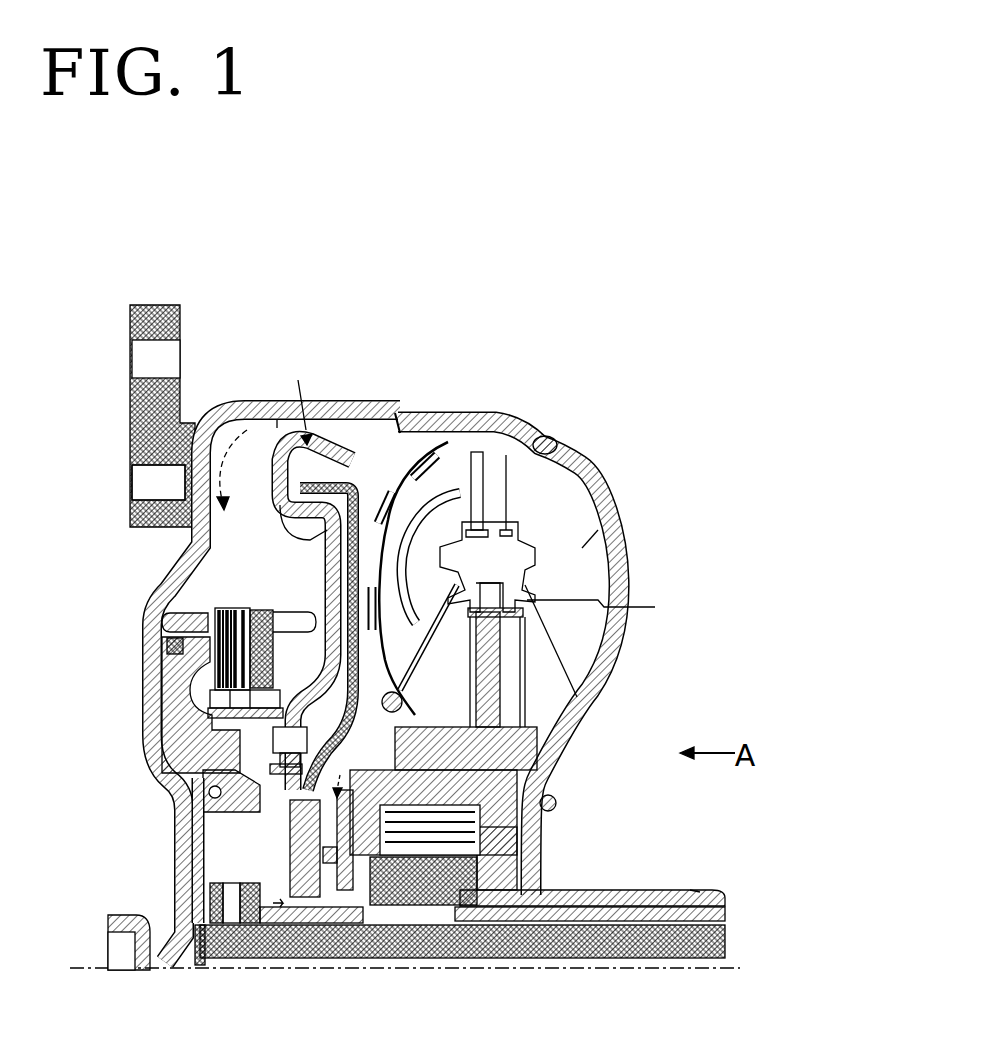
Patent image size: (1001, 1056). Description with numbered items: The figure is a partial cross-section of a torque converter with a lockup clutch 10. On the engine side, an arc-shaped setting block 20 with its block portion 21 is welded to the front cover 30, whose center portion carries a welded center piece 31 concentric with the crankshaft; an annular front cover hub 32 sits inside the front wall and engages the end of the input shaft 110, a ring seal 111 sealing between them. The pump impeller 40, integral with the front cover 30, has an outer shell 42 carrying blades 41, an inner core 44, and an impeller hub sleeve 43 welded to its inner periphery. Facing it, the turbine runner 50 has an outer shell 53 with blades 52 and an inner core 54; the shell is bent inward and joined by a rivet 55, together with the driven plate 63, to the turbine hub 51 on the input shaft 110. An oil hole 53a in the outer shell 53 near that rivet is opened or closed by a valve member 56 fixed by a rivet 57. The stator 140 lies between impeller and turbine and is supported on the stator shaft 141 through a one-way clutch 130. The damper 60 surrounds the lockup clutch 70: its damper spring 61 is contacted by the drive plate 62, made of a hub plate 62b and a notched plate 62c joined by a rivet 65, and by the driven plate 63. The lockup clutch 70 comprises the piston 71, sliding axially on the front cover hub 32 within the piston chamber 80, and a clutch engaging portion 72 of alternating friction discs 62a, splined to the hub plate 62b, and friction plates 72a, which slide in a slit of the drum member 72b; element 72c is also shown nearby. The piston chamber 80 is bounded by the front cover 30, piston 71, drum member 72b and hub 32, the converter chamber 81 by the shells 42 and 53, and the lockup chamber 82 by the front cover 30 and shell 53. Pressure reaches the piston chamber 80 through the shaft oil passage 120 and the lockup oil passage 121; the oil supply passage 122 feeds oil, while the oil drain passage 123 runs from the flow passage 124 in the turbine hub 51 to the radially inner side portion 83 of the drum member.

The torque converter with a lockup clutch 10 is at (764, 369).
The setting block 20 is at (130, 405).
The block portion 21 is at (130, 512).
The front cover 30 is at (247, 404).
The center piece 31 is at (108, 924).
The front cover hub 32 is at (176, 858).
The pump impeller 40 is at (630, 567).
The blades 41 is at (612, 525).
The outer shell 42 is at (575, 458).
The impeller hub sleeve 43 is at (692, 892).
The inner core 44 is at (611, 604).
The turbine runner 50 is at (450, 443).
The turbine hub 51 is at (243, 870).
The blades 52 is at (395, 490).
The outer shell 53 is at (410, 452).
The oil hole 53a is at (392, 712).
The inner core 54 is at (460, 553).
The rivet 55 is at (283, 868).
The valve member 56 is at (470, 722).
The rivet 57 is at (470, 702).
The damper 60 is at (300, 398).
The damper spring 61 is at (353, 470).
The drive plate 62 is at (273, 470).
The friction disc 62a is at (256, 580).
The hub plate 62b is at (240, 718).
The plate 62c is at (318, 614).
The driven plate 63 is at (327, 566).
The rivet 65 is at (273, 762).
The lockup clutch 70 is at (208, 600).
The piston 71 is at (178, 710).
The clutch engaging portion 72 is at (190, 660).
The friction plate 72a is at (223, 610).
The drum member 72b is at (212, 622).
The friction facing 72c is at (254, 610).
The piston chamber 80 is at (168, 772).
The converter chamber 81 is at (490, 500).
The lockup chamber 82 is at (277, 428).
The radially inner side portion 83 is at (176, 782).
The input shaft 110 is at (727, 945).
The ring seal 111 is at (215, 962).
The shaft oil passage 120 is at (735, 968).
The lockup oil passage 121 is at (190, 818).
The oil supply passage 122 is at (555, 893).
The oil drain passage 123 is at (380, 957).
The flow passage 124 is at (310, 925).
The one-way clutch 130 is at (548, 832).
The stator 140 is at (503, 677).
The stator shaft 141 is at (727, 914).